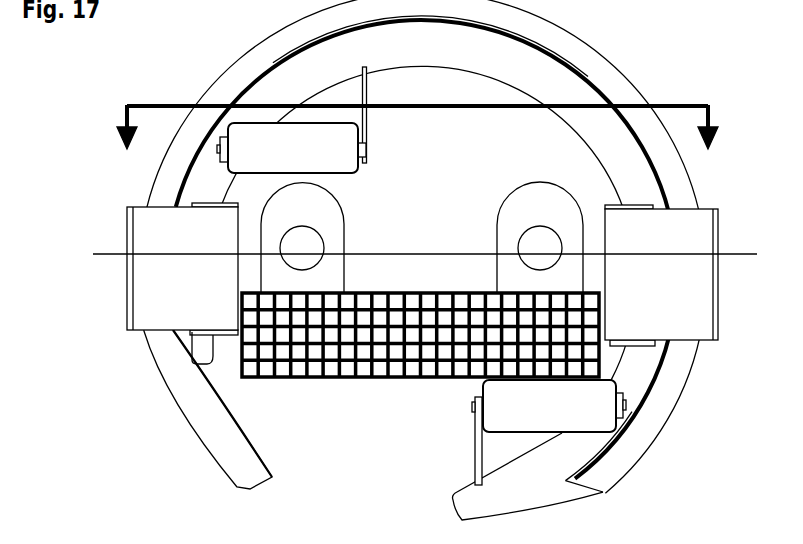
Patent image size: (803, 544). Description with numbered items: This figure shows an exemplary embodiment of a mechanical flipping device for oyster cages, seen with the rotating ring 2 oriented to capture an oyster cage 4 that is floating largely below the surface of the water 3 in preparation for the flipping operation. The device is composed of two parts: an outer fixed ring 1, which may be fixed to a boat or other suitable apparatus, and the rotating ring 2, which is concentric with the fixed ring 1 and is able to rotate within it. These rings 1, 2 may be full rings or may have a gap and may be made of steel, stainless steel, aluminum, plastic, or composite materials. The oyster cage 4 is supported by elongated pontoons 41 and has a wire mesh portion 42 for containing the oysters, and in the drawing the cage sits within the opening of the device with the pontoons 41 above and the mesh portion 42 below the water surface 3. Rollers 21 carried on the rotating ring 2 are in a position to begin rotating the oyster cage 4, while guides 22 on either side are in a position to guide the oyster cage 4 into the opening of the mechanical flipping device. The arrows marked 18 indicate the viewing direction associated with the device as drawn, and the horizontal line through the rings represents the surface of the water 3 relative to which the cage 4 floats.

The fixed ring 1 is at (608, 57).
The rotating ring 2 is at (572, 128).
The surface of the water 3 is at (100, 257).
The oyster cage 4 is at (420, 332).
The section view direction of FIG. 18 is at (419, 140).
The rollers 21 is at (262, 123).
The guides 22 is at (98, 181).
The elongated pontoons 41 is at (495, 238).
The wire mesh portion 42 is at (362, 378).